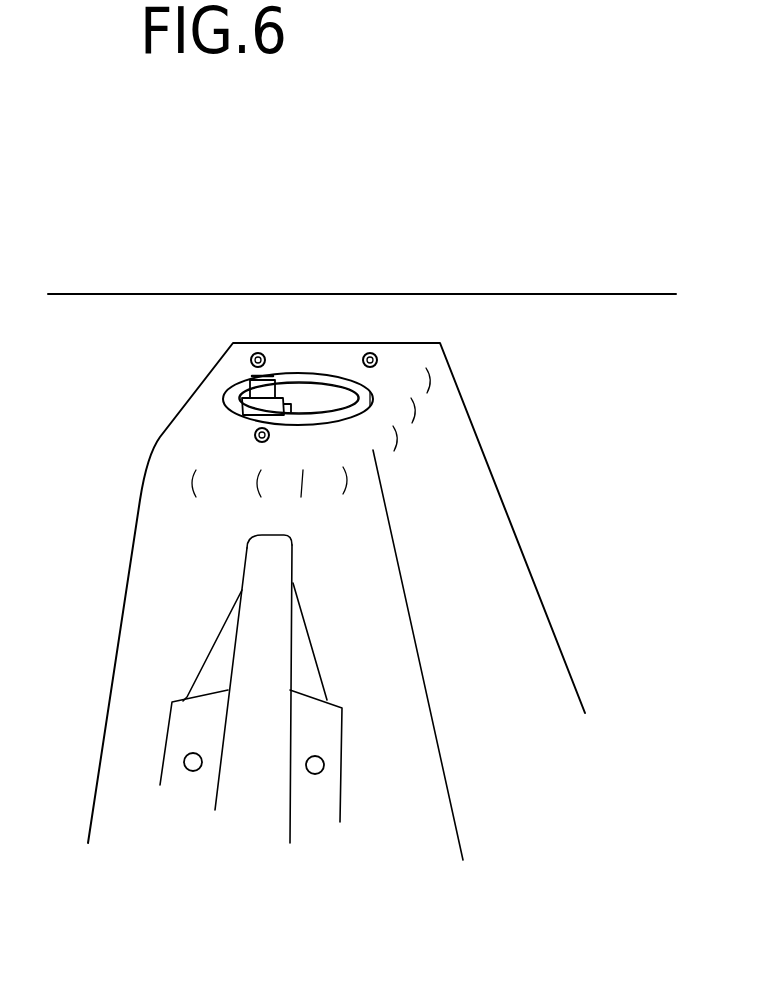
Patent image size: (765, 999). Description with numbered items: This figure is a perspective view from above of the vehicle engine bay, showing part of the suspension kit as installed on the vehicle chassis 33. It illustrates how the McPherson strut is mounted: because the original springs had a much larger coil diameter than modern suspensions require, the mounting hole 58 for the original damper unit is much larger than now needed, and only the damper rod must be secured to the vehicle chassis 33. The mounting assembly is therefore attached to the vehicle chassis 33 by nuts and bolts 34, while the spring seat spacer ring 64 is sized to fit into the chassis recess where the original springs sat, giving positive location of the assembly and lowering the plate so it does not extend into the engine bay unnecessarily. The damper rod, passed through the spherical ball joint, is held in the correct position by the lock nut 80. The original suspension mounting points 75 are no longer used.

The vehicle chassis 33 is at (470, 558).
The nuts and bolts 34 is at (382, 349).
The mounting hole 58 is at (291, 371).
The spring seat spacer ring 64 is at (316, 370).
The original suspension mounting points 75 is at (206, 770).
The lock nut 80 is at (240, 382).